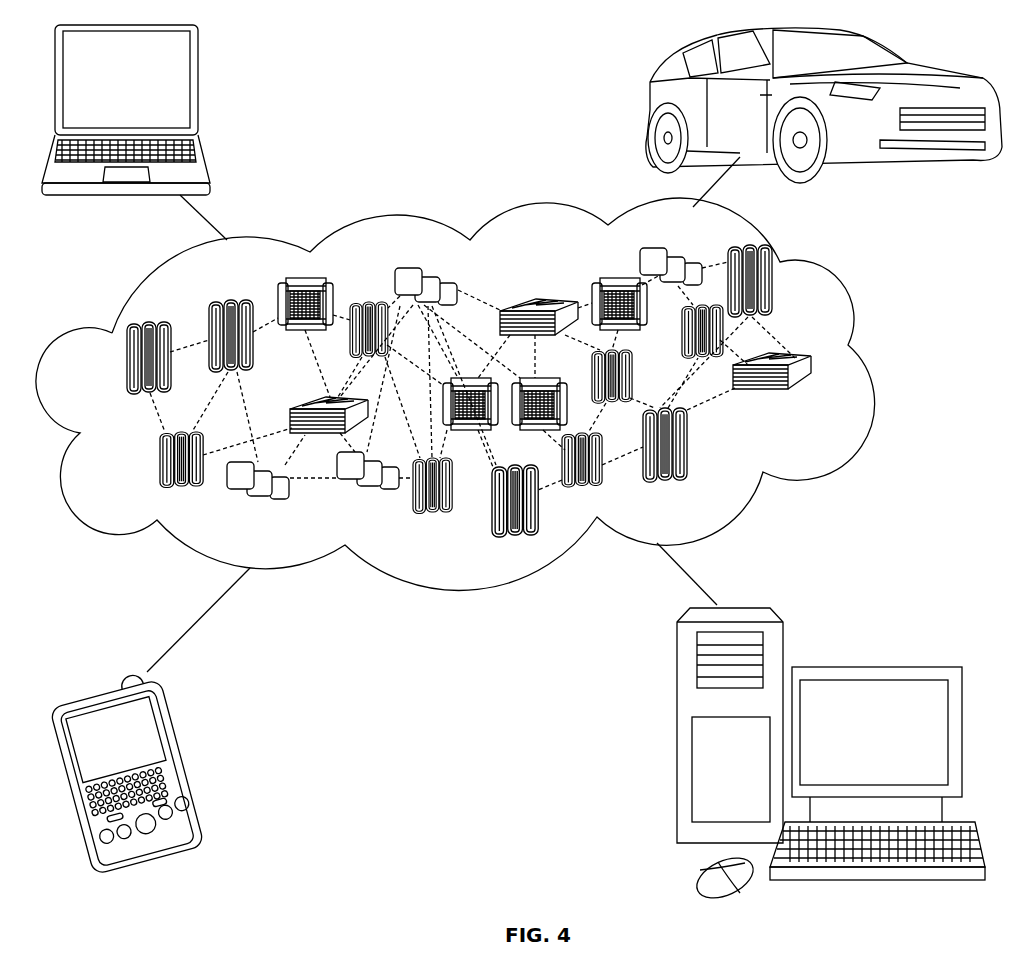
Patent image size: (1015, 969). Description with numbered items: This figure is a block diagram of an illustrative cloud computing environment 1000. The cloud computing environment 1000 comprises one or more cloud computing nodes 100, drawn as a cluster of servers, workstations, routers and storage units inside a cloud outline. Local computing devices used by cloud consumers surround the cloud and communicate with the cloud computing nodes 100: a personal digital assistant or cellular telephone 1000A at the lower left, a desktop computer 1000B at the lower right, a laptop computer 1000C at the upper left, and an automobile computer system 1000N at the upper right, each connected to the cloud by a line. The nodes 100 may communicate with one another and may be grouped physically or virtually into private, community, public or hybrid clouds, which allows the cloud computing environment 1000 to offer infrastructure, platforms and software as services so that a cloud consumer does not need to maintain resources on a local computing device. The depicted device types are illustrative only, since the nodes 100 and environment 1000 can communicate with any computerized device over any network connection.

The laptop computer 1000C is at (199, 90).
The automobile computer system 1000N is at (648, 108).
The personal digital assistant (PDA) or cellular telephone 1000A is at (186, 763).
The desktop computer 1000B is at (862, 666).
The cloud computing environment 1000 is at (498, 394).
The cloud computing nodes 100 is at (822, 403).